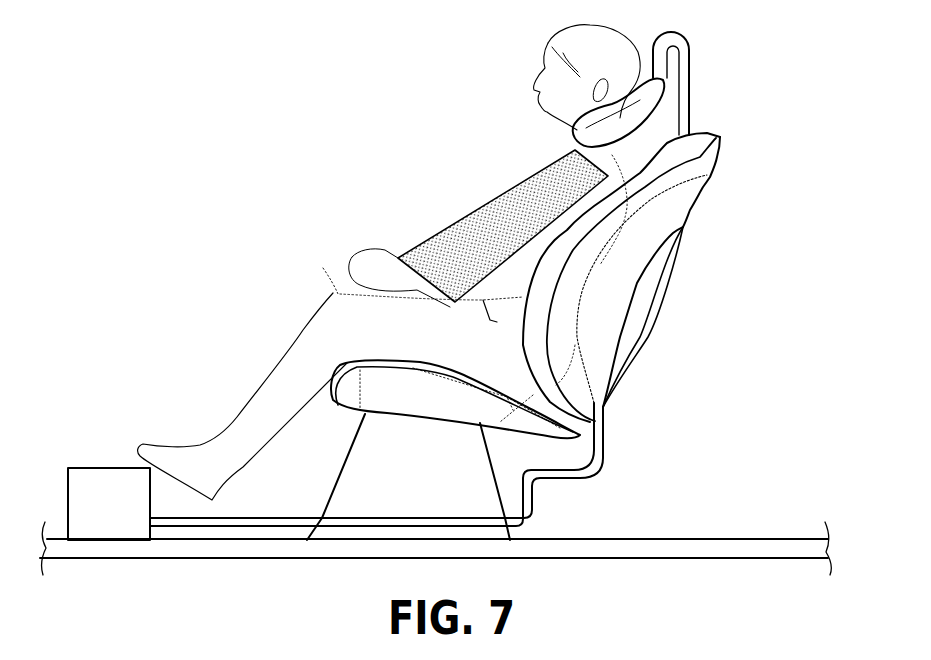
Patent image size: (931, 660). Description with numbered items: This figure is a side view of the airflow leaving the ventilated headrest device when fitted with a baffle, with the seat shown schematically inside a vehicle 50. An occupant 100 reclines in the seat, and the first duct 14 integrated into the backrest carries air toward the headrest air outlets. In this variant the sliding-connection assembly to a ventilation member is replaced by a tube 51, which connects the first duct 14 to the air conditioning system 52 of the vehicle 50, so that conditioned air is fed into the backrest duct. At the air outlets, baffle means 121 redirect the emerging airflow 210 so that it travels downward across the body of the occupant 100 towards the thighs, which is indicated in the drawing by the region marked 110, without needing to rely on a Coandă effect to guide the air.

The first duct 14 is at (645, 355).
The vehicle 50 is at (770, 547).
The tube 51 is at (533, 503).
The air conditioning system 52 is at (100, 488).
The occupant 100 is at (565, 92).
The occupant lower body 110 is at (350, 322).
The baffle means 121 is at (570, 135).
The airflow 210 is at (450, 247).